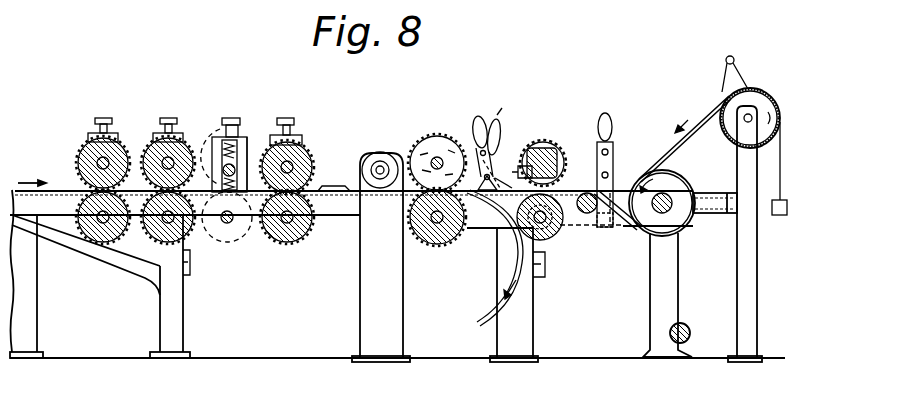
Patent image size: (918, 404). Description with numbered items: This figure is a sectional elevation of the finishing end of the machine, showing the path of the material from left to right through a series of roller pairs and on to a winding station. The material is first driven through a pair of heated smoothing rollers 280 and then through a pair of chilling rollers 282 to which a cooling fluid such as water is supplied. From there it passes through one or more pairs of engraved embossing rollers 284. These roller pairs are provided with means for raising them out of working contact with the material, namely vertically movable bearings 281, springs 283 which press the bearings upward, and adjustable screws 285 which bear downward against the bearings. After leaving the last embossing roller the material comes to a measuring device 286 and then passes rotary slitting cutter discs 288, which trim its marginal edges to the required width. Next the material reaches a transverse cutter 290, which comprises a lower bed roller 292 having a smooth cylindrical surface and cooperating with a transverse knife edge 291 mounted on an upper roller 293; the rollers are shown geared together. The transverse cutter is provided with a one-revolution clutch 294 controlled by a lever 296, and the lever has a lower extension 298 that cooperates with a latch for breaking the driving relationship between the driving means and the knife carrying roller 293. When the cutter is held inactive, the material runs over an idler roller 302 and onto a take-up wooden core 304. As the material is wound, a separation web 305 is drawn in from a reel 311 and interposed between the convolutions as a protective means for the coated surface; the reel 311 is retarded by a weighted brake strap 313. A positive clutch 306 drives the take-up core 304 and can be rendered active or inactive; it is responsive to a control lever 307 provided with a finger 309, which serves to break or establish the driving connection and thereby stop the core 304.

The heated smoothing rollers 280 is at (88, 156).
The chilling rollers 282 is at (147, 152).
The engraved embossing rollers 284 is at (222, 92).
The screws 285 is at (240, 140).
The vertically movable bearings 281 is at (250, 168).
The springs 283 is at (253, 175).
The measuring device 286 is at (381, 152).
The rotary slitting cutter discs 288 is at (433, 137).
The lower extension 298 is at (500, 188).
The lever 296 is at (477, 120).
The one-revolution clutch 294 is at (497, 113).
The upper roller 293 is at (553, 153).
The transverse cutter 290 is at (545, 144).
The transverse knife edge 291 is at (512, 143).
The lower bed roller 292 is at (548, 243).
The idler roller 302 is at (582, 215).
The finger 309 is at (606, 228).
The control lever 307 is at (612, 137).
The positive clutch 306 is at (615, 112).
The take-up wooden core 304 is at (672, 195).
The separation web 305 is at (703, 107).
The reel 311 is at (752, 100).
The weighted brake strap 313 is at (793, 140).